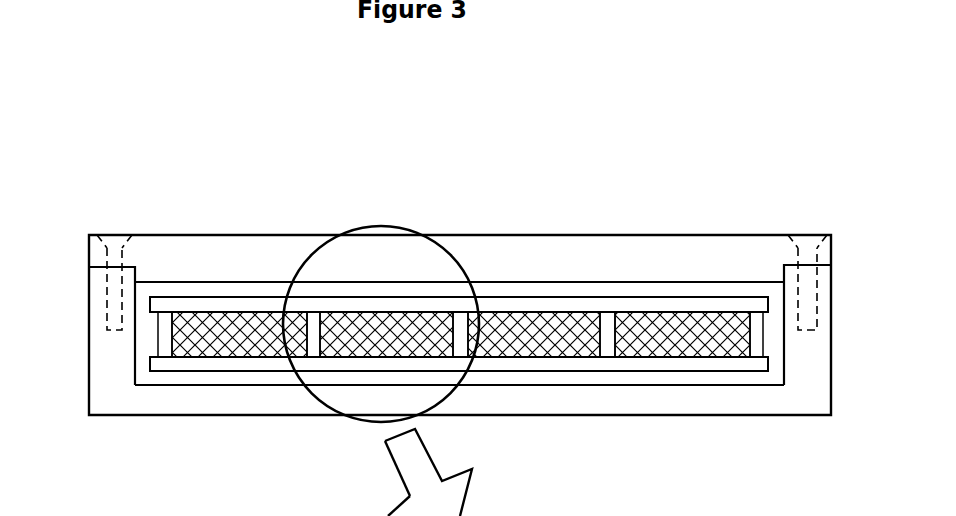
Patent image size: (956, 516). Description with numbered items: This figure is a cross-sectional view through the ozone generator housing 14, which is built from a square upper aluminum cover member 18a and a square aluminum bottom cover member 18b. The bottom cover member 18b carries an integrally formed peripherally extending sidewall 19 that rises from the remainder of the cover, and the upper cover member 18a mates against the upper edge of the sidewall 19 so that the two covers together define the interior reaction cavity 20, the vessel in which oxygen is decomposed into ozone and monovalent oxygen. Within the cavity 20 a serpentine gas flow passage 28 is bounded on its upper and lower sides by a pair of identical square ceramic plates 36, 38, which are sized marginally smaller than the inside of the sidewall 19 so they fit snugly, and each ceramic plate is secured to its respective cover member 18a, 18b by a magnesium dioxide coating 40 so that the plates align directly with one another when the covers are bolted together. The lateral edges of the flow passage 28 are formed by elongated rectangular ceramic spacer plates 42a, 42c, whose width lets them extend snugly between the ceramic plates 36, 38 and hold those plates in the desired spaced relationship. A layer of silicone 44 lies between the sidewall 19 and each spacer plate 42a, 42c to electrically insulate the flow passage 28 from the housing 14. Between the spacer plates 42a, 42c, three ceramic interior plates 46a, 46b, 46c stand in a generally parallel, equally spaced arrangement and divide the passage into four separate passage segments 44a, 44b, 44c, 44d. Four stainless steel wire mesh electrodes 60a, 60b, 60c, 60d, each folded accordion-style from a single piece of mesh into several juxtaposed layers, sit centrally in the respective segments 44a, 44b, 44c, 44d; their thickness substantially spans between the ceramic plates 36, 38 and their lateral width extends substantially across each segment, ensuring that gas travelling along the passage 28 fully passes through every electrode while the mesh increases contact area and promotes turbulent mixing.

The housing 14 is at (799, 124).
The upper aluminum cover member 18a is at (460, 280).
The bottom cover member 18b is at (460, 372).
The sidewall 19 is at (78, 313).
The interior reaction cavity 20 is at (588, 314).
The gas flow passage 28 is at (736, 322).
The ceramic plate 36 is at (698, 289).
The ceramic plate 38 is at (666, 380).
The magnesium dioxide coating 40 is at (758, 274).
The spacer plate 42a is at (166, 366).
The spacer plate 42c is at (753, 365).
The layer of silicone 44 is at (460, 394).
The passage segment 44a is at (188, 304).
The passage segment 44b is at (336, 304).
The passage segment 44c is at (486, 304).
The passage segment 44d is at (631, 304).
The ceramic interior plate 46a is at (313, 366).
The ceramic interior plate 46b is at (461, 366).
The ceramic interior plate 46c is at (607, 366).
The wire mesh electrode 60a is at (239, 334).
The wire mesh electrode 60b is at (386, 334).
The wire mesh electrode 60c is at (534, 334).
The wire mesh electrode 60d is at (682, 334).